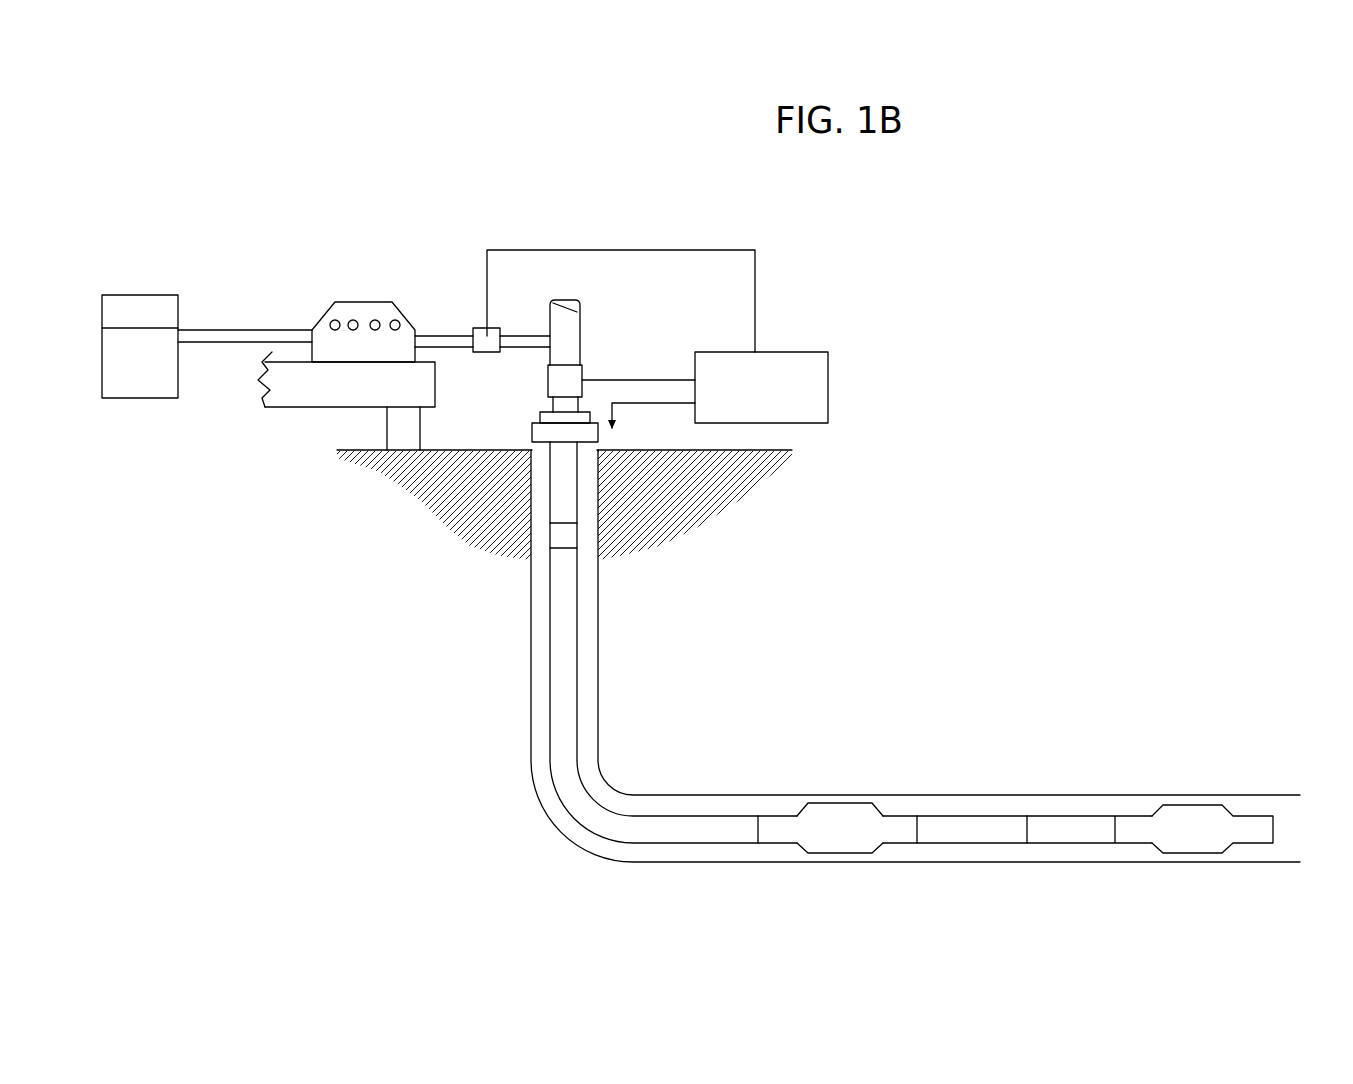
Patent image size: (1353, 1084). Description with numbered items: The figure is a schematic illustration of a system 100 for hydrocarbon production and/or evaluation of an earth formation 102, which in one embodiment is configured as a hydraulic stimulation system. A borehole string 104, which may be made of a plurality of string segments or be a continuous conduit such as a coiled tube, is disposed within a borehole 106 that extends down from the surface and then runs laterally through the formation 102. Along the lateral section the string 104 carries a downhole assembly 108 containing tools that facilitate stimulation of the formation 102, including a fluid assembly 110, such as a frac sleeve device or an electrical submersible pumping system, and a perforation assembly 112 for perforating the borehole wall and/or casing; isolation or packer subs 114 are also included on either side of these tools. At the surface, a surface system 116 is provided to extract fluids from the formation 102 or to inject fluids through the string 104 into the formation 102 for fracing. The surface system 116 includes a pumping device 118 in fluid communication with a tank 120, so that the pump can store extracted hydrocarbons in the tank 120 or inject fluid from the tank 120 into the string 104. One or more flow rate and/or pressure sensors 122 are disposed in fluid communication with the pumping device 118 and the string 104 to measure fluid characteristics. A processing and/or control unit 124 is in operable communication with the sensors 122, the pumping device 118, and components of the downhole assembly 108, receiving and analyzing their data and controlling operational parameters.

The system 100 is at (1044, 395).
The earth formation 102 is at (455, 540).
The borehole string 104 is at (560, 678).
The borehole 106 is at (537, 763).
The downhole assembly 108 is at (1104, 758).
The fluid assembly 110 is at (957, 830).
The perforation assembly 112 is at (1052, 823).
The packer sub 114 is at (820, 816).
The surface system 116 is at (296, 248).
The pumping device 118 is at (387, 312).
The tank 120 is at (133, 378).
The sensor 122 is at (555, 382).
The processing and/or control unit 124 is at (657, 339).